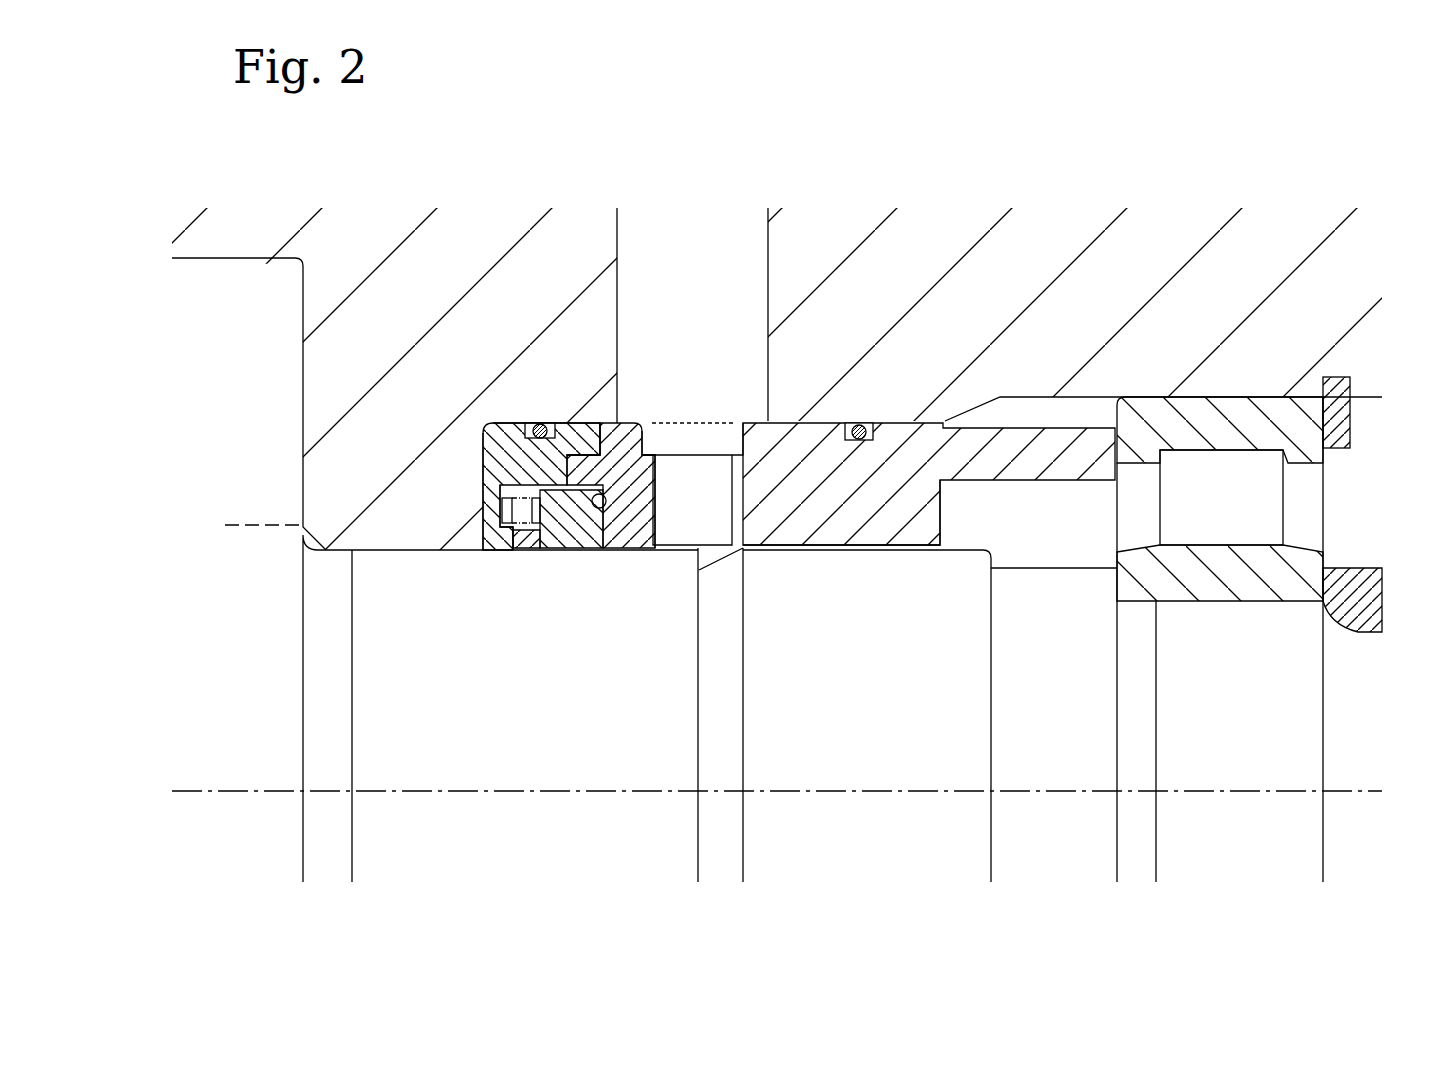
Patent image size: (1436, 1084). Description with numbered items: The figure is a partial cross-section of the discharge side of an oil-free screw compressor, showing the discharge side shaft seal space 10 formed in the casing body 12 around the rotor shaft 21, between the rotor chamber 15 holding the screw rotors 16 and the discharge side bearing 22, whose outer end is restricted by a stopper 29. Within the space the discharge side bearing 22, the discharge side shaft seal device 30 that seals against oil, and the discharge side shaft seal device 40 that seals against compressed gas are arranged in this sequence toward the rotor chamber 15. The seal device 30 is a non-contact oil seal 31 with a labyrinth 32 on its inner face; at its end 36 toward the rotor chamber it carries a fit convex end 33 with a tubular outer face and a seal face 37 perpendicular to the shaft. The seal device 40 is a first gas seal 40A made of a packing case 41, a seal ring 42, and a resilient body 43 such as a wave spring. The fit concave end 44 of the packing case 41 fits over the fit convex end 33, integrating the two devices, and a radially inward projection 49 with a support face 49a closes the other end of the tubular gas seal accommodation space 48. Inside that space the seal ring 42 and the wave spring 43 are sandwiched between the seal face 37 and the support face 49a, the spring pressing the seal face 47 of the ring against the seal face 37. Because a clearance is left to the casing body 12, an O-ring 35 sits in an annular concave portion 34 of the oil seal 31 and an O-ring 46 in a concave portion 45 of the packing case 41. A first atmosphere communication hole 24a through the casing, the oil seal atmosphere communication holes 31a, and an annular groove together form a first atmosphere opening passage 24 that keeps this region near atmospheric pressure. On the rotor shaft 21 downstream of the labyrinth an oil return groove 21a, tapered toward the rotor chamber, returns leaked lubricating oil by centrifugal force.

The discharge side shaft seal space 10 is at (825, 550).
The casing body 12 is at (1022, 242).
The rotor chamber 15 is at (222, 258).
The screw rotors 16 is at (287, 323).
The rotor shaft 21 is at (777, 744).
The oil return groove 21a is at (724, 725).
The discharge side bearing 22 is at (1243, 407).
The first atmosphere opening passage 24 is at (742, 332).
The first atmosphere communication hole 24a is at (750, 248).
The stopper 29 is at (1343, 387).
The discharge side shaft seal device 30 is at (929, 430).
The oil seal 31 is at (795, 463).
The oil seal atmosphere communication holes 31a is at (680, 532).
The labyrinth 32 is at (900, 562).
The fit convex end 33 is at (593, 437).
The concave portion 34 is at (847, 423).
The O-ring 35 is at (867, 422).
The end of the oil seal 36 is at (622, 488).
The seal face 37 is at (680, 523).
The discharge side shaft seal device 40 is at (537, 506).
The first gas seal 40A is at (507, 410).
The packing case 41 is at (490, 462).
The seal ring 42 is at (580, 532).
The resilient body 43 is at (505, 527).
The fit concave end 44 is at (585, 457).
The concave portion 45 is at (525, 423).
The O-ring 46 is at (540, 425).
The seal face 47 is at (612, 520).
The gas seal accommodation space 48 is at (482, 457).
The projection 49 is at (487, 530).
The support face 49a is at (512, 550).